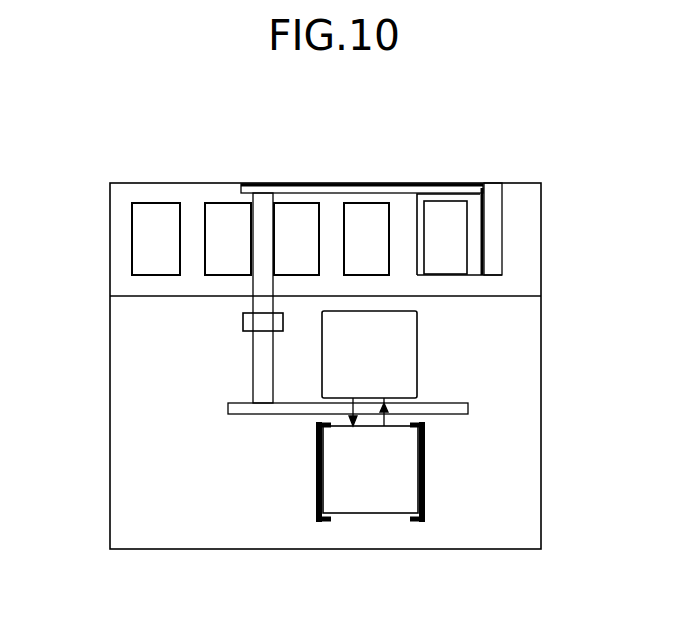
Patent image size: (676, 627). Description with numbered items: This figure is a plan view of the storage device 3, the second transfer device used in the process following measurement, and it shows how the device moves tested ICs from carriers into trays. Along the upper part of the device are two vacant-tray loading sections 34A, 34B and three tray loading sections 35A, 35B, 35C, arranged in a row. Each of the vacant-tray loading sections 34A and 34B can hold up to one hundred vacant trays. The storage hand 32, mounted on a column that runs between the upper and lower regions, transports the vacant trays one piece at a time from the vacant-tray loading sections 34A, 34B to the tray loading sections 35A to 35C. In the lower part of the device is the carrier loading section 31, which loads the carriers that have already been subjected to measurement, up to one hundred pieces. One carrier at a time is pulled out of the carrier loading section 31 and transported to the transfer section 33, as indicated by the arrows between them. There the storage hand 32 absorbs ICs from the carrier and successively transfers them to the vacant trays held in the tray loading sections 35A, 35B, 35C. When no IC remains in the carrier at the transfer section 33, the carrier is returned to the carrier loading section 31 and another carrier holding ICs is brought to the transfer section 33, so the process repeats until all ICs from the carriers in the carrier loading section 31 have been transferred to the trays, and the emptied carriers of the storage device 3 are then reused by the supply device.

The storage device 3 is at (127, 550).
The carrier loading section 31 is at (360, 513).
The storage hand 32 is at (243, 322).
The transfer section 33 is at (417, 356).
The vacant-tray loading section 34A is at (132, 242).
The vacant-tray loading section 34B is at (227, 203).
The tray loading section 35A is at (303, 203).
The tray loading section 35B is at (367, 203).
The tray loading section 35C is at (442, 201).